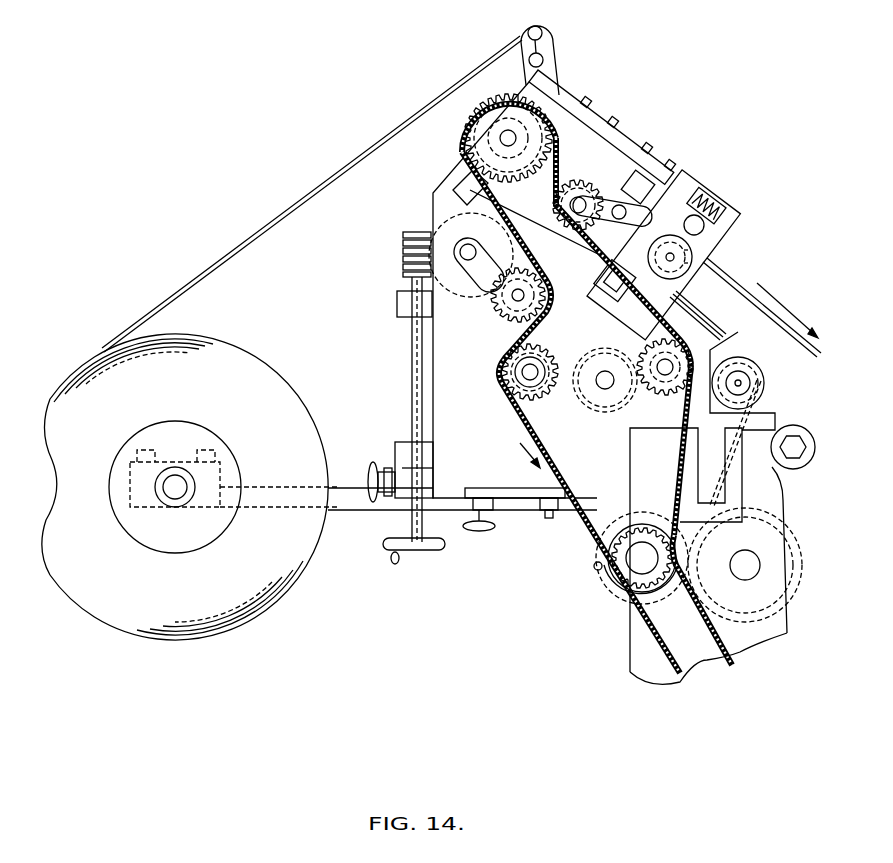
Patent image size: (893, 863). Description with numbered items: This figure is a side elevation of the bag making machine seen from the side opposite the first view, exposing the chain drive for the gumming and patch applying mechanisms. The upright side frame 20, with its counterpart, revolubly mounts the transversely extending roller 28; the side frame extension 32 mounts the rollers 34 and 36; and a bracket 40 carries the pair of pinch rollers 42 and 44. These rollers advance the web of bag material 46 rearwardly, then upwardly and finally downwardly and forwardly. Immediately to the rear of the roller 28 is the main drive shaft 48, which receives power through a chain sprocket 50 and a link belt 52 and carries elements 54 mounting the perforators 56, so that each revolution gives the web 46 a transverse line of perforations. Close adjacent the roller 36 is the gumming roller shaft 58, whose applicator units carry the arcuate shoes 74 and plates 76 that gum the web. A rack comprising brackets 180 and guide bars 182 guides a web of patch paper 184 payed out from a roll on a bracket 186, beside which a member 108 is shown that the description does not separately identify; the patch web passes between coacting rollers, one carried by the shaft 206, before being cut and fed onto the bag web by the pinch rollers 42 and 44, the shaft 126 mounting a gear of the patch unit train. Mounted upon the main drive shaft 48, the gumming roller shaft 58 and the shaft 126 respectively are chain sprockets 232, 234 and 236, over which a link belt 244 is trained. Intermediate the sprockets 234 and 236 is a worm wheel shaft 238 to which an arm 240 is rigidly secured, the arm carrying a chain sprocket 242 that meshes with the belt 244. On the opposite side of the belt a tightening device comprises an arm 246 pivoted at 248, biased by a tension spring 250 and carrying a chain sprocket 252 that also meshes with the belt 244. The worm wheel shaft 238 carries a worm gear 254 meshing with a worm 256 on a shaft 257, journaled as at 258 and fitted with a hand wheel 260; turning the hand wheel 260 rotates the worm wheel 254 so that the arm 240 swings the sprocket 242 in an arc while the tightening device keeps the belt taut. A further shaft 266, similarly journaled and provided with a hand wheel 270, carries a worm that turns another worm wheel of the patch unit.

The side frame 20 is at (657, 663).
The roller 28 is at (792, 567).
The side frame extension 32 is at (494, 462).
The roller 34 is at (757, 371).
The roller 36 is at (597, 408).
The bracket 40 is at (698, 193).
The pinch roller 42 is at (688, 262).
The pinch roller 44 is at (705, 221).
The web of bag material 46 is at (733, 285).
The main drive shaft 48 is at (637, 567).
The chain sprocket 50 is at (617, 542).
The link belt 52 is at (735, 662).
The mounting elements 54 is at (622, 592).
The perforators 56 is at (594, 567).
The gumming roller shaft 58 is at (528, 376).
The shoes 74 is at (565, 402).
The plates 76 is at (502, 385).
The knob 108 is at (372, 462).
The shaft 126 is at (500, 138).
The brackets 180 is at (546, 38).
The guide bars 182 is at (528, 27).
The web of patch paper 184 is at (325, 181).
The bracket 186 is at (353, 503).
The shaft 206 is at (549, 311).
The chain sprocket 232 is at (657, 575).
The chain sprocket 234 is at (506, 366).
The chain sprocket 236 is at (545, 113).
The worm wheel shaft 238 is at (456, 236).
The arm 240 is at (483, 272).
The chain sprocket 242 is at (541, 290).
The link belt 244 is at (556, 462).
The arm 246 is at (621, 204).
The pivot 248 is at (590, 196).
The tension spring 250 is at (674, 188).
The chain sprocket 252 is at (567, 231).
The worm gear 254 is at (428, 231).
The worm 256 is at (403, 258).
The journal 258 is at (404, 303).
The shaft 257 is at (412, 377).
The hand wheel 260 is at (420, 550).
The shaft 266 is at (707, 322).
The hand wheel 270 is at (768, 293).